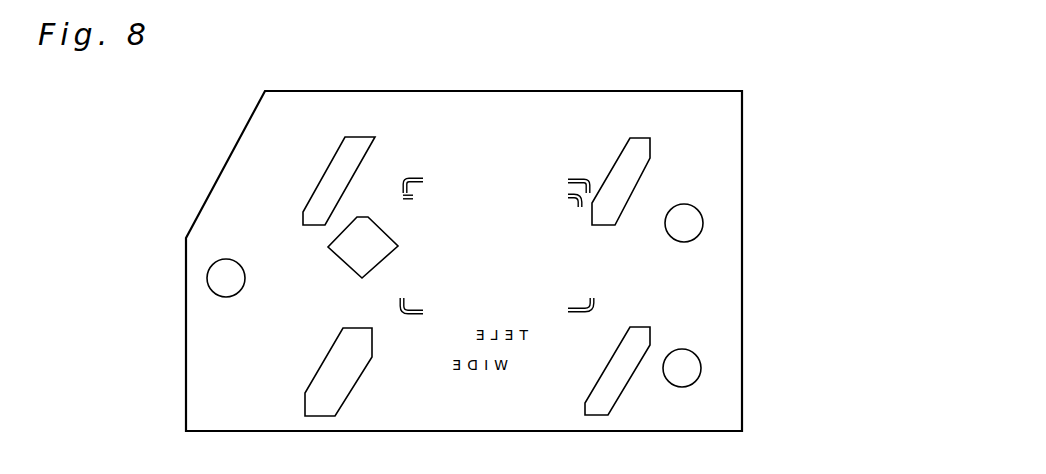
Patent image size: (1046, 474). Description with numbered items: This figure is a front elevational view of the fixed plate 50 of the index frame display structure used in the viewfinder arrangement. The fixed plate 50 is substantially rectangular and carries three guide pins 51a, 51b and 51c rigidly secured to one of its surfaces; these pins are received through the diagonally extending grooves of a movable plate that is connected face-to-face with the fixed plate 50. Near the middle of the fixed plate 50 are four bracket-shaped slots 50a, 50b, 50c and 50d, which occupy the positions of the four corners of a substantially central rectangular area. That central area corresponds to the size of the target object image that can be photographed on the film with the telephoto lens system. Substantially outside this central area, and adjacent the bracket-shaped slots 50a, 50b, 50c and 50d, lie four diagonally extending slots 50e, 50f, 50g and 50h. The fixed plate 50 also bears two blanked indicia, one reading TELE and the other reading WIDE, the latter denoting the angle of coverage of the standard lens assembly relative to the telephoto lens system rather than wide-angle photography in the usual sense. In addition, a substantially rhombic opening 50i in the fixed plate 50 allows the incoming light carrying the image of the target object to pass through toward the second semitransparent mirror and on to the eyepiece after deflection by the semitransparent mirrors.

The fixed plate 50 is at (690, 117).
The bracket-shaped slot 50a is at (582, 177).
The bracket-shaped slot 50b is at (593, 302).
The bracket-shaped slot 50c is at (405, 315).
The bracket-shaped slot 50d is at (415, 178).
The diagonally extending slot 50e is at (638, 138).
The diagonally extending slot 50f is at (643, 327).
The diagonally extending slot 50g is at (305, 400).
The diagonally extending slot 50h is at (358, 138).
The rhombic opening 50i is at (338, 260).
The guide pin 51a is at (690, 205).
The guide pin 51b is at (690, 368).
The guide pin 51c is at (222, 281).